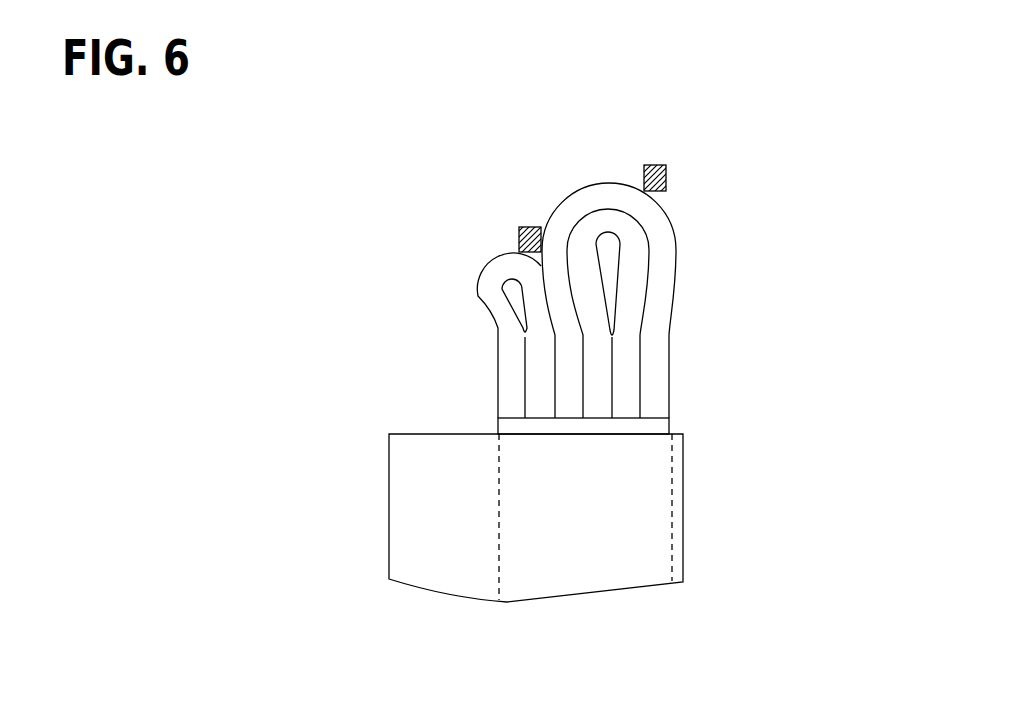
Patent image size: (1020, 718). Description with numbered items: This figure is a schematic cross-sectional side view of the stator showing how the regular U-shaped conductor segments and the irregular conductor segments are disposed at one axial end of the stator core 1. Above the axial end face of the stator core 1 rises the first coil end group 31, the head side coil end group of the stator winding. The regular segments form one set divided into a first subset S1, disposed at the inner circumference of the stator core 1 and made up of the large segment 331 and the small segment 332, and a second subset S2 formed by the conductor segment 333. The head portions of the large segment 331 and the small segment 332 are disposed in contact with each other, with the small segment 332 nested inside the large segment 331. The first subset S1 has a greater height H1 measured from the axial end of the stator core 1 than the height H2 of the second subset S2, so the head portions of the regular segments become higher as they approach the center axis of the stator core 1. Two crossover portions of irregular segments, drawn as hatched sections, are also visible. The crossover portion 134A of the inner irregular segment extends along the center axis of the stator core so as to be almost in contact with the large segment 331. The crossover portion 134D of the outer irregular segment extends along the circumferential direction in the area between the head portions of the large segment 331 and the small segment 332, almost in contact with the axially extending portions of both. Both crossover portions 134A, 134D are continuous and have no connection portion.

The stator core 1 is at (421, 572).
The first coil end group 31 is at (596, 232).
The large segment 331 is at (667, 233).
The small segment 332 is at (630, 282).
The conductor segment 333 is at (482, 290).
The crossover portion 134A is at (666, 172).
The crossover portion 134D is at (531, 227).
The first subset S1 is at (679, 383).
The second subset S2 is at (487, 367).
The height of first subset H1 is at (644, 183).
The height of second subset H2 is at (519, 250).